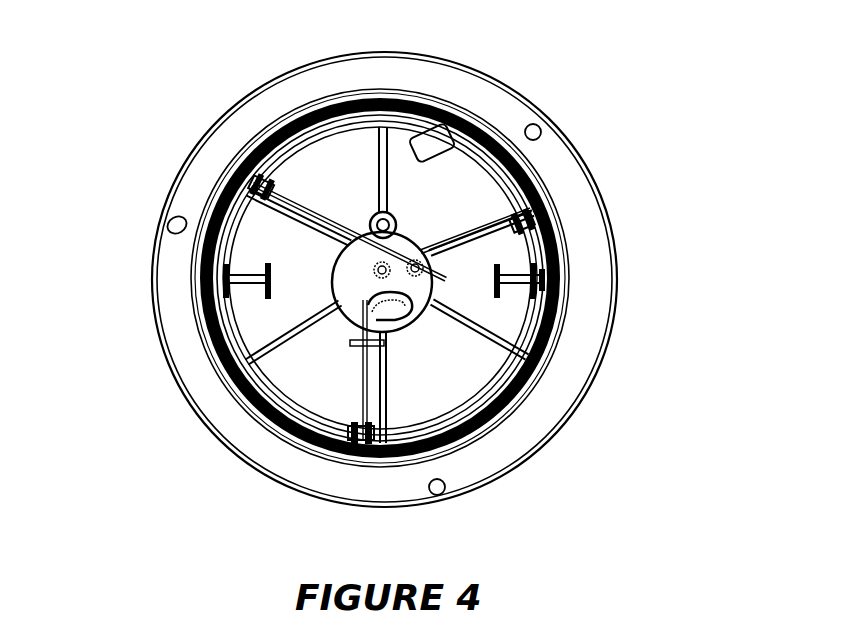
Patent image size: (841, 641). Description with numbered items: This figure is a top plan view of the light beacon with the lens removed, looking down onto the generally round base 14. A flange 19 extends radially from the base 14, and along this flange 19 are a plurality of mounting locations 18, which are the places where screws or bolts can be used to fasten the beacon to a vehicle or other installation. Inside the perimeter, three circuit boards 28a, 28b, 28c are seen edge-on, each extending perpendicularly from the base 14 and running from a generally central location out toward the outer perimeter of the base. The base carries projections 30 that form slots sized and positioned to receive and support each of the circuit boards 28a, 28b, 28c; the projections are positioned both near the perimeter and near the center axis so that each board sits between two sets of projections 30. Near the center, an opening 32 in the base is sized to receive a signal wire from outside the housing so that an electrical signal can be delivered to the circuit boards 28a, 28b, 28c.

The base 14 is at (593, 192).
The mounting locations 18 is at (170, 230).
The flange 19 is at (510, 452).
The circuit board 28a is at (375, 385).
The circuit board 28b is at (488, 233).
The circuit board 28c is at (295, 218).
The projections 30 is at (268, 185).
The opening 32 is at (400, 307).